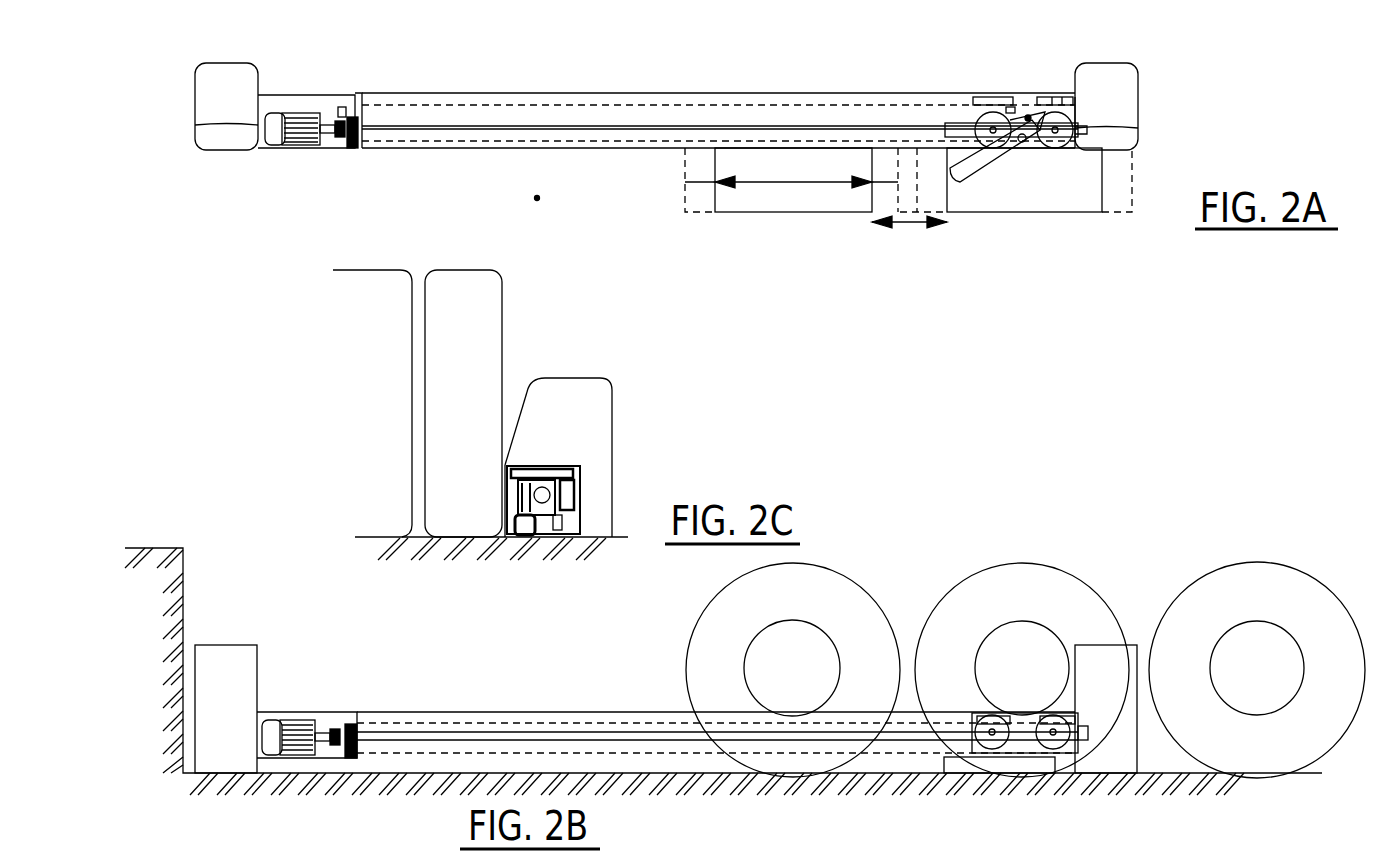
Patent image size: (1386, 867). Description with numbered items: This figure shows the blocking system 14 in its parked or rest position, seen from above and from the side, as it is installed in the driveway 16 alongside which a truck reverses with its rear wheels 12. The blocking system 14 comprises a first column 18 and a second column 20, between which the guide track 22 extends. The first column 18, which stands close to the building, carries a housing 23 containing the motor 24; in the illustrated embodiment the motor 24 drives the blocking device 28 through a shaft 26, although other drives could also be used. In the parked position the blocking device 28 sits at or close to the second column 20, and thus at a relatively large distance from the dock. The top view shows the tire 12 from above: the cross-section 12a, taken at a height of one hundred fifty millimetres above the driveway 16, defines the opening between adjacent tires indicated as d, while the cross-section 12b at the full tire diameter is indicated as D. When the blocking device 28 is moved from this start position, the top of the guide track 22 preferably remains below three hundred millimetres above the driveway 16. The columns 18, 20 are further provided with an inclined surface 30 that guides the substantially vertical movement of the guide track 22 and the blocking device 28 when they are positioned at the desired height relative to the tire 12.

In FIG. 2A, the rear wheel 12 is at (660, 190).
In FIG. 2C, the rear wheel 12 is at (470, 325).
In FIG. 2B, the rear wheel 12 is at (848, 601).
In FIG. 2A, the cross-section of the tire at 150 mm height 12a is at (795, 205).
In FIG. 2A, the cross-section of the tire at its diameter 12b is at (685, 205).
In FIG. 2A, the blocking system 14 is at (180, 133).
In FIG. 2A, the driveway 16 is at (537, 198).
In FIG. 2A, the first column 18 is at (225, 112).
In FIG. 2B, the first column 18 is at (222, 665).
In FIG. 2A, the second column 20 is at (1115, 85).
In FIG. 2C, the second column 20 is at (595, 400).
In FIG. 2B, the second column 20 is at (1105, 755).
In FIG. 2A, the guide track 22 is at (493, 101).
In FIG. 2A, the housing 23 is at (338, 110).
In FIG. 2A, the motor 24 is at (300, 130).
In FIG. 2A, the shaft 26 is at (405, 128).
In FIG. 2A, the blocking device 28 is at (1040, 157).
In FIG. 2C, the blocking device 28 is at (555, 495).
In FIG. 2C, the inclined surface 30 is at (527, 396).